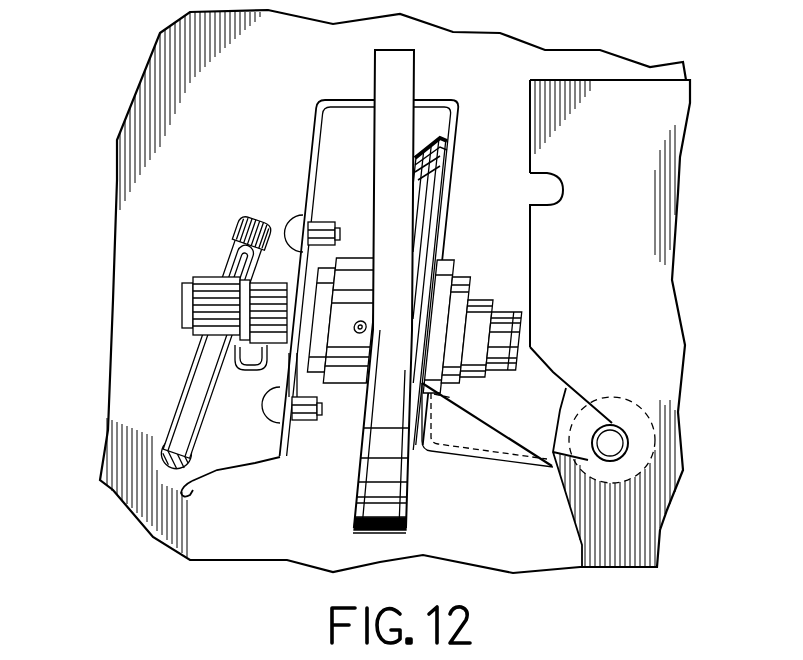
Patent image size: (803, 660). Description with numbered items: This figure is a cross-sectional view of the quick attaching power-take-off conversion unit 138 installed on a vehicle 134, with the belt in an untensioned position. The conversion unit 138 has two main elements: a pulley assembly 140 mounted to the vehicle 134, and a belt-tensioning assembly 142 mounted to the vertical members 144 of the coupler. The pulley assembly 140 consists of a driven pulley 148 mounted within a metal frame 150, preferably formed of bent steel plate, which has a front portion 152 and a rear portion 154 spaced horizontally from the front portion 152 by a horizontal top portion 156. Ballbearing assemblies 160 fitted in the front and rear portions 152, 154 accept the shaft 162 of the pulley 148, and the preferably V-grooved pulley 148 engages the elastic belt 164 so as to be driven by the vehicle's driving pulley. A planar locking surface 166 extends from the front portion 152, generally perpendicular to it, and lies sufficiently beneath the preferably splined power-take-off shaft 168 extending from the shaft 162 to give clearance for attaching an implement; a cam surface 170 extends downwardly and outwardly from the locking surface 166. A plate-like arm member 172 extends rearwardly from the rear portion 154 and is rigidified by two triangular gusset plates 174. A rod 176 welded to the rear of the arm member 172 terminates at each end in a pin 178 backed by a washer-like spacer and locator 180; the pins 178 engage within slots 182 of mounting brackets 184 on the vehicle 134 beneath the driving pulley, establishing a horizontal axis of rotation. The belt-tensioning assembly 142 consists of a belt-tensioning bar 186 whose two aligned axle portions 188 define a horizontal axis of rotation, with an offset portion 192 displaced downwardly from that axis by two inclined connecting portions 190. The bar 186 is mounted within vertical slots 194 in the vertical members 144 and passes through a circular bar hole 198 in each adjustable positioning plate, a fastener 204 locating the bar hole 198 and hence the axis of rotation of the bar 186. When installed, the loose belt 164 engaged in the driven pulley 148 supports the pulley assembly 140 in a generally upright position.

The vehicle 134 is at (514, 97).
The power-take-off conversion unit 138 is at (184, 269).
The pulley assembly 140 is at (283, 507).
The belt-tensioning assembly 142 is at (167, 317).
The vertical members 144 is at (165, 371).
The driven pulley 148 is at (353, 483).
The frame 150 is at (343, 160).
The front portion 152 is at (300, 160).
The rear portion 154 is at (452, 210).
The horizontal top portion 156 is at (337, 97).
The ballbearing assemblies 160 is at (333, 263).
The shaft 162 is at (327, 373).
The elastic belt 164 is at (453, 67).
The locking surface 166 is at (250, 468).
The power-take-off shaft 168 is at (183, 308).
The cam surface 170 is at (182, 495).
The arm member 172 is at (500, 465).
The gusset plates 174 is at (483, 420).
The rod 176 is at (637, 463).
The pin 178 is at (590, 402).
The spacer and locator 180 is at (570, 418).
The slots 182 is at (567, 388).
The mounting brackets 184 is at (618, 242).
The belt-tensioning bar 186 is at (183, 410).
The axle portions 188 is at (238, 221).
The inclined connecting portions 190 is at (200, 360).
The offset portion 192 is at (198, 471).
The vertical slots 194 is at (235, 242).
The bar hole 198 is at (258, 218).
The fastener 204 is at (235, 368).